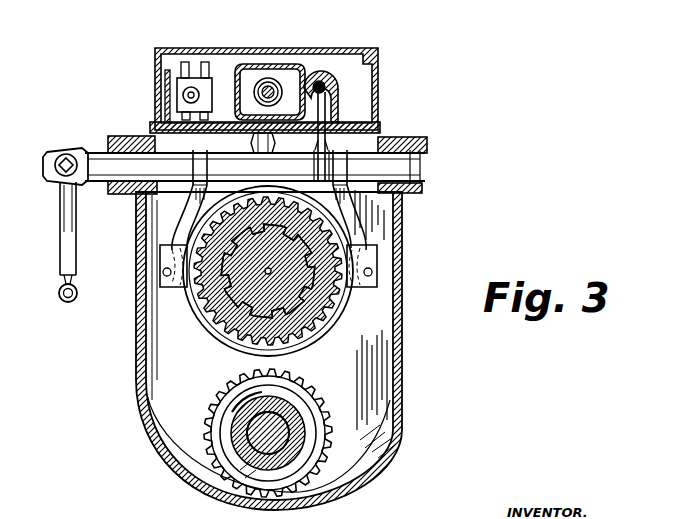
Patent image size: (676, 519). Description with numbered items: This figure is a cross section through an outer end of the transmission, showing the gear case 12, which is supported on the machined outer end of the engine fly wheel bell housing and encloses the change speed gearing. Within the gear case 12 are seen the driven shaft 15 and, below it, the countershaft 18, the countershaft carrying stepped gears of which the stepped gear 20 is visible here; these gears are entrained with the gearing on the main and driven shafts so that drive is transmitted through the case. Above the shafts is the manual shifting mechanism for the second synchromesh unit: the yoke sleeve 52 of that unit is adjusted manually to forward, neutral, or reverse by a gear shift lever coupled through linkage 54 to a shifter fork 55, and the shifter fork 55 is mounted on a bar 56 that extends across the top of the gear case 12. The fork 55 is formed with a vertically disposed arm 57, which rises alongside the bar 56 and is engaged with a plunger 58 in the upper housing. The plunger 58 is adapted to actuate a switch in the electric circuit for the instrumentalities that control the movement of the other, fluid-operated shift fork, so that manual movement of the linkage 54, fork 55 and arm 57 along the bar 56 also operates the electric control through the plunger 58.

The gear case 12 is at (388, 458).
The driven shaft 15 is at (318, 336).
The countershaft 18 is at (300, 405).
The stepped gear 20 is at (298, 390).
The yoke sleeve 52 is at (333, 325).
The linkage 54 is at (78, 294).
The shifter fork 55 is at (372, 240).
The bar 56 is at (112, 183).
The vertically disposed arm 57 is at (340, 128).
The plunger 58 is at (316, 84).